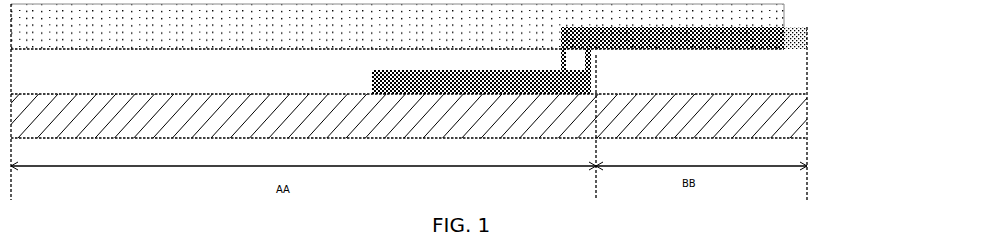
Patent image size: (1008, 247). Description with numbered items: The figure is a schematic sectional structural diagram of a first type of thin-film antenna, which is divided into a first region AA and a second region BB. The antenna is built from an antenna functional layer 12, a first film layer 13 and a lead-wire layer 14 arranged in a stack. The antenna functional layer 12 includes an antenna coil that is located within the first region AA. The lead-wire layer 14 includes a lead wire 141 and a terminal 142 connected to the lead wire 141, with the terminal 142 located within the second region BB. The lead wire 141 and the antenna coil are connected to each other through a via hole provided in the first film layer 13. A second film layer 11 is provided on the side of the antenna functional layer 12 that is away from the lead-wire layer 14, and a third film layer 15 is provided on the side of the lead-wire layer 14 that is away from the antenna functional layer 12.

The second film layer 11 is at (757, 128).
The antenna functional layer 12 is at (547, 89).
The first film layer 13 is at (757, 88).
The lead-wire layer 14 is at (736, 44).
The lead wire 141 is at (708, 42).
The terminal 142 is at (793, 41).
The third film layer 15 is at (750, 10).